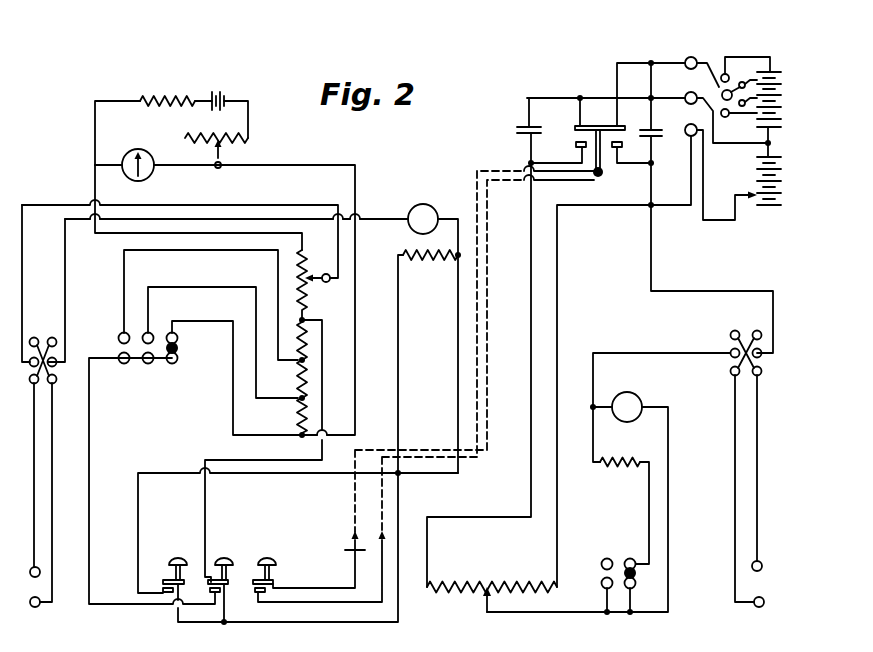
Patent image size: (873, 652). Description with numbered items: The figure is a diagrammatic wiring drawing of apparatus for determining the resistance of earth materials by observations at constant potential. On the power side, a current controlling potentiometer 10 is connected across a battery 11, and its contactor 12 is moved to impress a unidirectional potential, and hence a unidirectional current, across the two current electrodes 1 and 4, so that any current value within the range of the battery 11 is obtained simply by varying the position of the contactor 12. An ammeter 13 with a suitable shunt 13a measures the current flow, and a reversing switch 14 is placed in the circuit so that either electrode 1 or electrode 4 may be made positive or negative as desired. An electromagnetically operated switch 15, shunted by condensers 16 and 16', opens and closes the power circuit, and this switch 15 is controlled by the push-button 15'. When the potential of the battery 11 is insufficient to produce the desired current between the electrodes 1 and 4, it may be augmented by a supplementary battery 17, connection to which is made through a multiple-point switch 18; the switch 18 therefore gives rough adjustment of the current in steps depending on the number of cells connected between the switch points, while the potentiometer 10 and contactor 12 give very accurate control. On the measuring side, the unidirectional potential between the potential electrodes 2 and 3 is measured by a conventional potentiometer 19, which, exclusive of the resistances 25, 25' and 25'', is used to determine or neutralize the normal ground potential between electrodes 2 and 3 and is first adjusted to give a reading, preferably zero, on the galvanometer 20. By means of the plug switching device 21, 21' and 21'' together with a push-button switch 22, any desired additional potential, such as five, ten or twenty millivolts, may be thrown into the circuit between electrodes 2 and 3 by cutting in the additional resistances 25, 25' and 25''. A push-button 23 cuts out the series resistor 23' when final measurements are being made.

The current electrode 1 is at (764, 607).
The potential electrode 2 is at (30, 570).
The potential electrode 3 is at (34, 608).
The current electrode 4 is at (764, 569).
The current controlling potentiometer 10 is at (495, 584).
The battery 11 is at (762, 178).
The contactor 12 is at (486, 613).
The ammeter 13 is at (640, 400).
The shunt 13a is at (625, 467).
The reversing switch 14 is at (759, 358).
The electromagnetically operated switch 15 is at (605, 161).
The push-button 15' is at (317, 566).
The condenser 16 is at (513, 119).
The condenser 16' is at (662, 121).
The supplementary battery 17 is at (781, 70).
The multiple-point switch 18 is at (726, 73).
The potentiometer 19 is at (306, 275).
The galvanometer 20 is at (423, 204).
The plug switching device 21 is at (115, 367).
The plug switching device 21' is at (153, 369).
The plug switching device 21'' is at (187, 368).
The push-button switch 22 is at (226, 558).
The push-button 23 is at (174, 561).
The series resistor 23' is at (430, 269).
The resistance 25 is at (323, 341).
The resistance 25' is at (326, 379).
The resistance 25'' is at (328, 415).